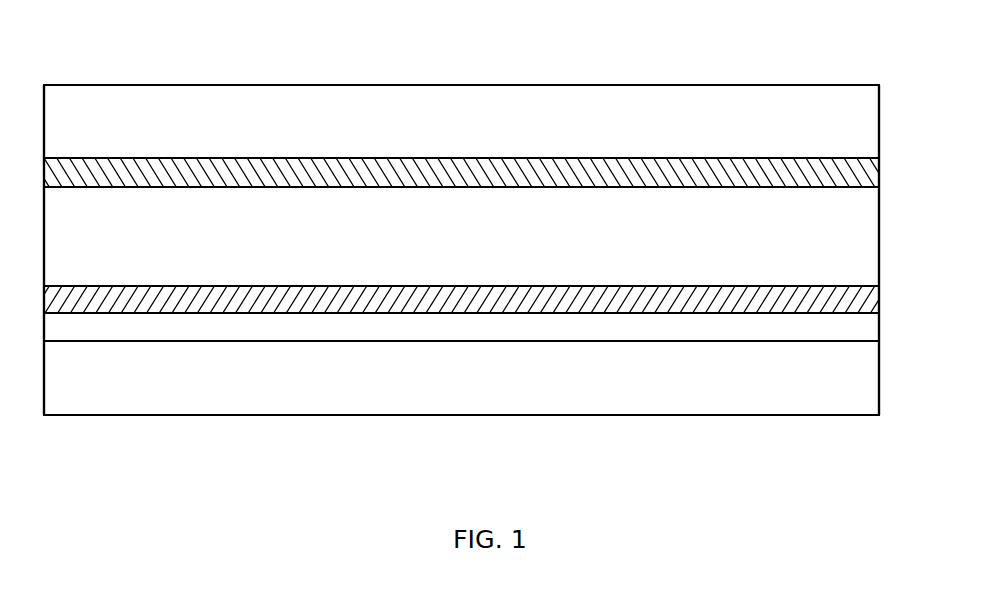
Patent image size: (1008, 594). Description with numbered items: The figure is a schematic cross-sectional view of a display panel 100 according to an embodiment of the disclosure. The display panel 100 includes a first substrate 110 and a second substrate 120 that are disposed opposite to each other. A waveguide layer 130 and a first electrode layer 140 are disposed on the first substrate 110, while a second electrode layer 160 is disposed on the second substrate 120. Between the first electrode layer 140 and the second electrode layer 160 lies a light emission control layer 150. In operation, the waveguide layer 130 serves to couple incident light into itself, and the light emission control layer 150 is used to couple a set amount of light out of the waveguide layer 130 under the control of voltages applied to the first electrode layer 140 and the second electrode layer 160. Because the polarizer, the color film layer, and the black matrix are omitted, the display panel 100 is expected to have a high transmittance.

The display panel 100 is at (98, 35).
The first substrate 110 is at (461, 413).
The second substrate 120 is at (461, 85).
The waveguide layer 130 is at (461, 399).
The first electrode layer 140 is at (454, 385).
The light emission control layer 150 is at (461, 149).
The second electrode layer 160 is at (453, 100).